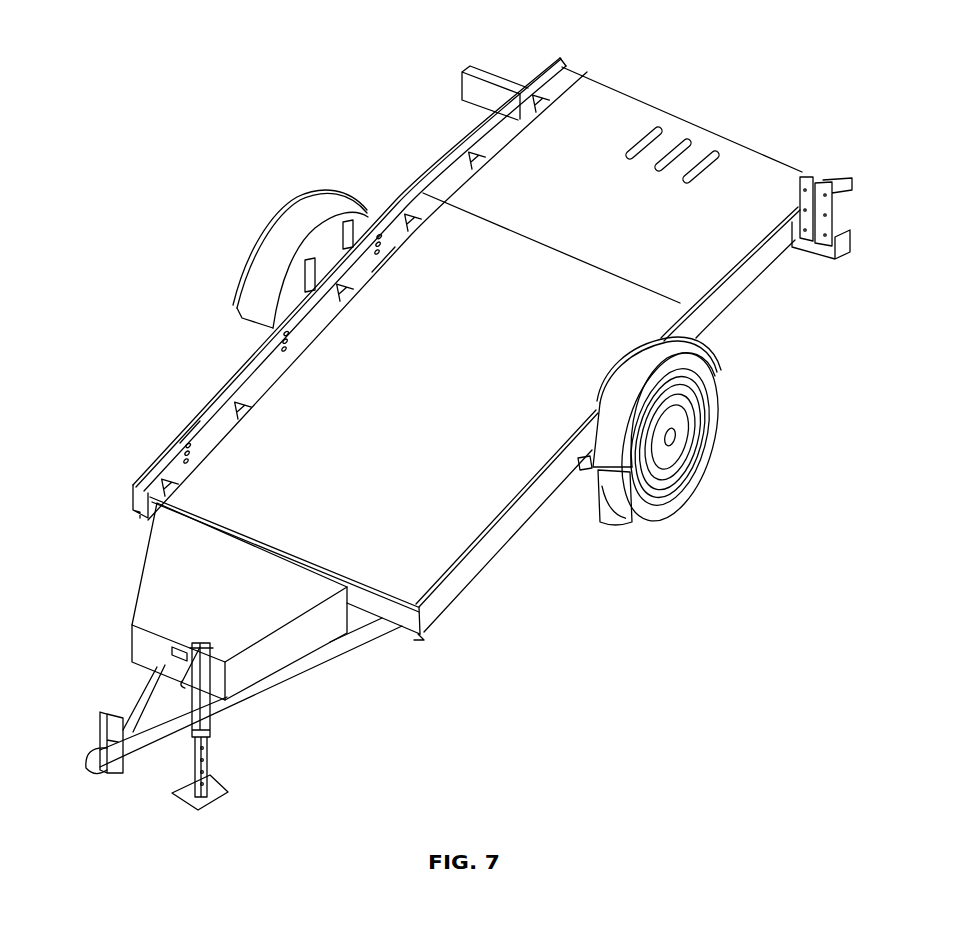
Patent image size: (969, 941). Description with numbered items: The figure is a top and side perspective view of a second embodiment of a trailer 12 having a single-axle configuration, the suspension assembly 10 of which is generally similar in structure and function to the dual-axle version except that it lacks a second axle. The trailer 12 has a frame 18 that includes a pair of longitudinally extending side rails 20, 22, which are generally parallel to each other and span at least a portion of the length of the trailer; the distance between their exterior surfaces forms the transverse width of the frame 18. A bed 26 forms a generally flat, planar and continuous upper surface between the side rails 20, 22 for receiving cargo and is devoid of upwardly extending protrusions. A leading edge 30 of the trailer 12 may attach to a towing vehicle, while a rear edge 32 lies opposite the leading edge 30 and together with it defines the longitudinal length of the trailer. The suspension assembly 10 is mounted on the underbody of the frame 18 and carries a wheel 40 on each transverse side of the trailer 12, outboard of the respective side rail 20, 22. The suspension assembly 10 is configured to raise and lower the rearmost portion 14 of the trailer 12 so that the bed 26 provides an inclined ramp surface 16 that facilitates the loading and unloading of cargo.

The suspension assembly 10 is at (579, 478).
The trailer 12 is at (153, 464).
The rearmost portion 14 is at (452, 152).
The inclined ramp surface 16 is at (612, 112).
The frame 18 is at (405, 615).
The side rail 20 is at (192, 433).
The side rail 22 is at (458, 580).
The bed 26 is at (400, 258).
The leading edge 30 is at (90, 755).
The rear edge 32 is at (770, 156).
The wheel 40 is at (247, 337).